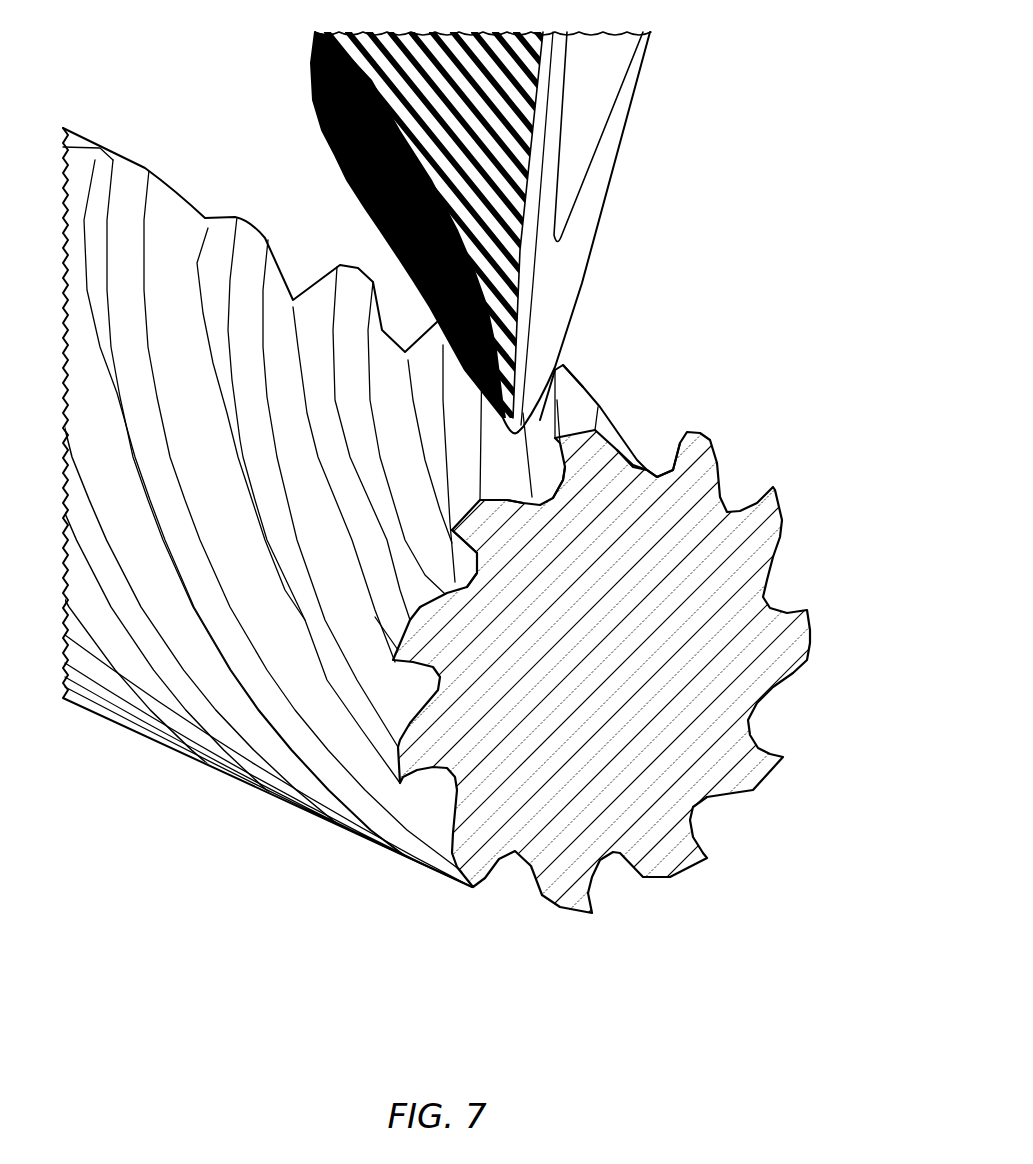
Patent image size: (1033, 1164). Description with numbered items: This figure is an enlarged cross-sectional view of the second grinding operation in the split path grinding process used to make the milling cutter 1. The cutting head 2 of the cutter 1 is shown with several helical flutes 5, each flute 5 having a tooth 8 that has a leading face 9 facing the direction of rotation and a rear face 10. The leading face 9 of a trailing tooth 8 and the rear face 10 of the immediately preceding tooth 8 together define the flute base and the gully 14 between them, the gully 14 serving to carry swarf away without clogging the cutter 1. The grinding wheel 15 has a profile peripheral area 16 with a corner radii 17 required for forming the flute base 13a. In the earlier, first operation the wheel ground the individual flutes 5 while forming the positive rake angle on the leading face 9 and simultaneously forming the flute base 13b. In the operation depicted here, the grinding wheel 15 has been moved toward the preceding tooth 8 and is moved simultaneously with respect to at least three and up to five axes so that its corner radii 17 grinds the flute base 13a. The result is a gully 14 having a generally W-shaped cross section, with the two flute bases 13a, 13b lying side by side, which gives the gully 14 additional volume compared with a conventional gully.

The cutting tool 1 is at (178, 148).
The cutting head 2 is at (772, 405).
The helical flute 5 is at (663, 405).
The tooth 8 is at (460, 403).
The leading face 9 is at (560, 457).
The rear face 10 is at (606, 430).
The flute base 13a is at (598, 508).
The flute base 13b is at (507, 548).
The gully 14 is at (637, 449).
The grinding wheel 15 is at (600, 70).
The profile peripheral area 16 is at (560, 273).
The corner radii 17 is at (566, 365).